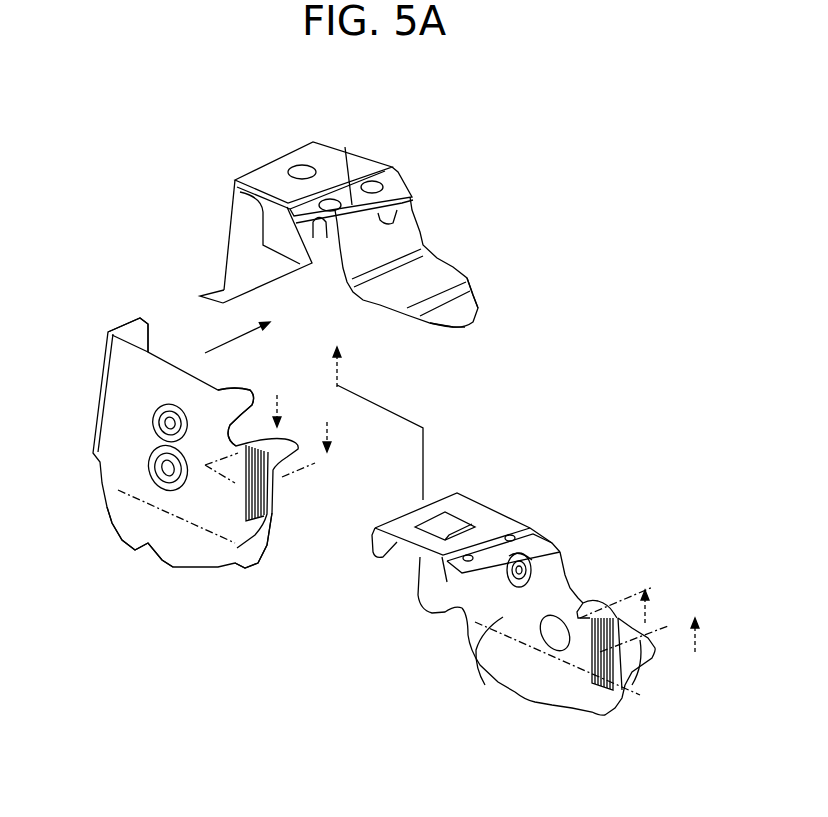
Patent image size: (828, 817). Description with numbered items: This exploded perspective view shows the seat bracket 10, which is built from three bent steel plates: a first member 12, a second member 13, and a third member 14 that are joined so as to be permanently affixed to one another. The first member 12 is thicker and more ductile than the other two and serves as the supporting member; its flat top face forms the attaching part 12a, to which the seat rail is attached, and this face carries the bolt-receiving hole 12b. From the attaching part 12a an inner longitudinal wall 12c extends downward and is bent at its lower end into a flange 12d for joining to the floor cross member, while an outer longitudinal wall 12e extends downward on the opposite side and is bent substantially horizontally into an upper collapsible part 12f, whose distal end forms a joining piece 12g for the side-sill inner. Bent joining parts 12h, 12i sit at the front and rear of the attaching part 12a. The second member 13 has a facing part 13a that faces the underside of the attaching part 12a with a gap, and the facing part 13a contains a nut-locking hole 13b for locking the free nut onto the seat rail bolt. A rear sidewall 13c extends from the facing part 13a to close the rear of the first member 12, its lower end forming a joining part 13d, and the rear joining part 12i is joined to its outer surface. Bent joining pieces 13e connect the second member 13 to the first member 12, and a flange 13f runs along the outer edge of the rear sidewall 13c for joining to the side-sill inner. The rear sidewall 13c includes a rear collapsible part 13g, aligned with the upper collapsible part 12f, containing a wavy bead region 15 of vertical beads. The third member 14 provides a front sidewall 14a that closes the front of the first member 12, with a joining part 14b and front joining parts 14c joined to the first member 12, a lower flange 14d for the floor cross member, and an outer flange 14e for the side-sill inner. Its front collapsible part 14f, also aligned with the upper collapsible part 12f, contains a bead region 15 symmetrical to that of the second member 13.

The seat bracket 10 is at (603, 356).
The first member 12 is at (389, 155).
The attaching part 12a is at (268, 170).
The bolt-receiving hole 12b is at (298, 163).
The longitudinal wall 12c is at (232, 220).
The flange 12d is at (208, 293).
The longitudinal wall 12e is at (403, 235).
The upper collapsible part 12f is at (452, 265).
The joining piece 12g is at (465, 316).
The joining part 12h is at (296, 252).
The joining part 12i is at (404, 210).
The third member 14 is at (228, 579).
The front sidewall 14a is at (118, 448).
The joining part 14b is at (123, 323).
The front joining parts 14c is at (224, 427).
The flange 14d is at (148, 547).
The flange 14e is at (262, 557).
The front collapsible part 14f is at (273, 488).
The second member 13 is at (546, 528).
The facing part 13a is at (467, 513).
The nut-locking hole 13b is at (447, 540).
The rear sidewall 13c is at (478, 670).
The joining part 13d is at (513, 687).
The joining pieces 13e is at (385, 558).
The flange 13f is at (640, 680).
The rear collapsible part 13g is at (622, 690).
The bead region 15 is at (592, 630).